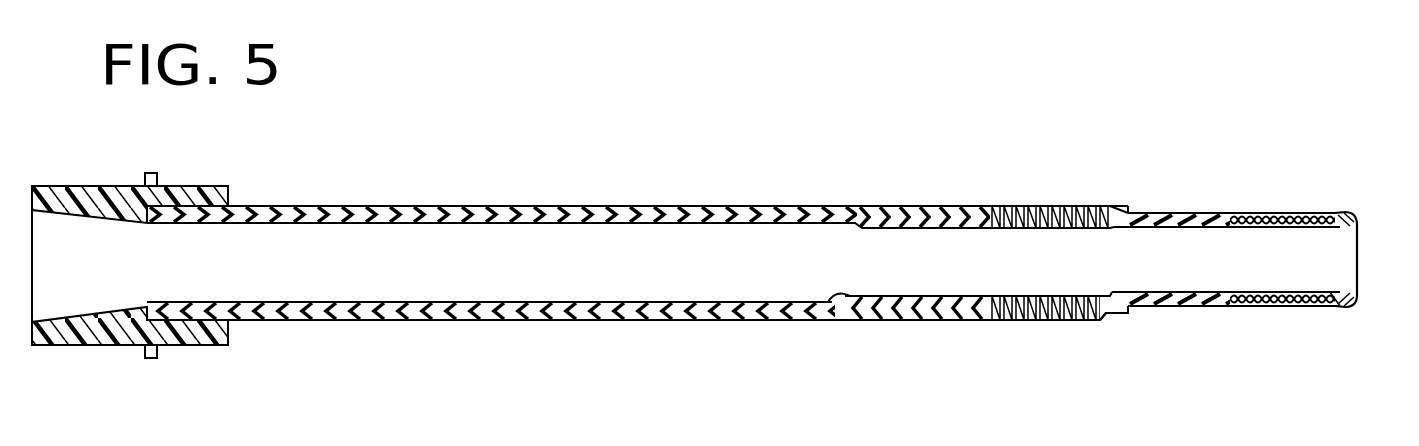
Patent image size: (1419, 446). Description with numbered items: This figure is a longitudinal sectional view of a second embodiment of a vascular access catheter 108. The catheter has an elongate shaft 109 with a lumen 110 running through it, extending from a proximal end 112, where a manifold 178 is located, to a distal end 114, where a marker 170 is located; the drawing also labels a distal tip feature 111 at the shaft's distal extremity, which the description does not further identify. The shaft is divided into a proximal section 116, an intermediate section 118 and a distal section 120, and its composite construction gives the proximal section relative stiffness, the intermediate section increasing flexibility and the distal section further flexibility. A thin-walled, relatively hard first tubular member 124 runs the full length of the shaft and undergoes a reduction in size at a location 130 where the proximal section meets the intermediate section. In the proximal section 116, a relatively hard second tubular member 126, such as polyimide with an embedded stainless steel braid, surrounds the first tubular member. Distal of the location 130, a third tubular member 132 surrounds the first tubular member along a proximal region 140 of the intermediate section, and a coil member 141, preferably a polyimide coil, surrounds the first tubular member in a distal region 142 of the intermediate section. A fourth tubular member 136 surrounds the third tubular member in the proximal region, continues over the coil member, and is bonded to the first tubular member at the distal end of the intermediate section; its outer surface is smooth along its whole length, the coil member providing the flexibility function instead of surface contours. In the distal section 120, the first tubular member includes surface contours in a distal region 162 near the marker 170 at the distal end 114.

The vascular access catheter 108 is at (535, 140).
The elongate shaft 109 is at (720, 203).
The lumen 110 is at (462, 296).
The distal tip 111 is at (1358, 240).
The proximal end 112 is at (213, 364).
The distal end 114 is at (1326, 325).
The proximal section 116 is at (743, 254).
The intermediate section 118 is at (962, 235).
The distal section 120 is at (1256, 248).
The first tubular member 124 is at (743, 344).
The second tubular member 126 is at (597, 320).
The location 130 is at (832, 302).
The third tubular member 132 is at (905, 320).
The fourth tubular member 136 is at (962, 320).
The proximal region 140 is at (885, 193).
The coil member 141 is at (1042, 320).
The distal region 142 is at (1108, 193).
The distal region 162 is at (1340, 210).
The marker 170 is at (1342, 307).
The manifold 178 is at (152, 176).